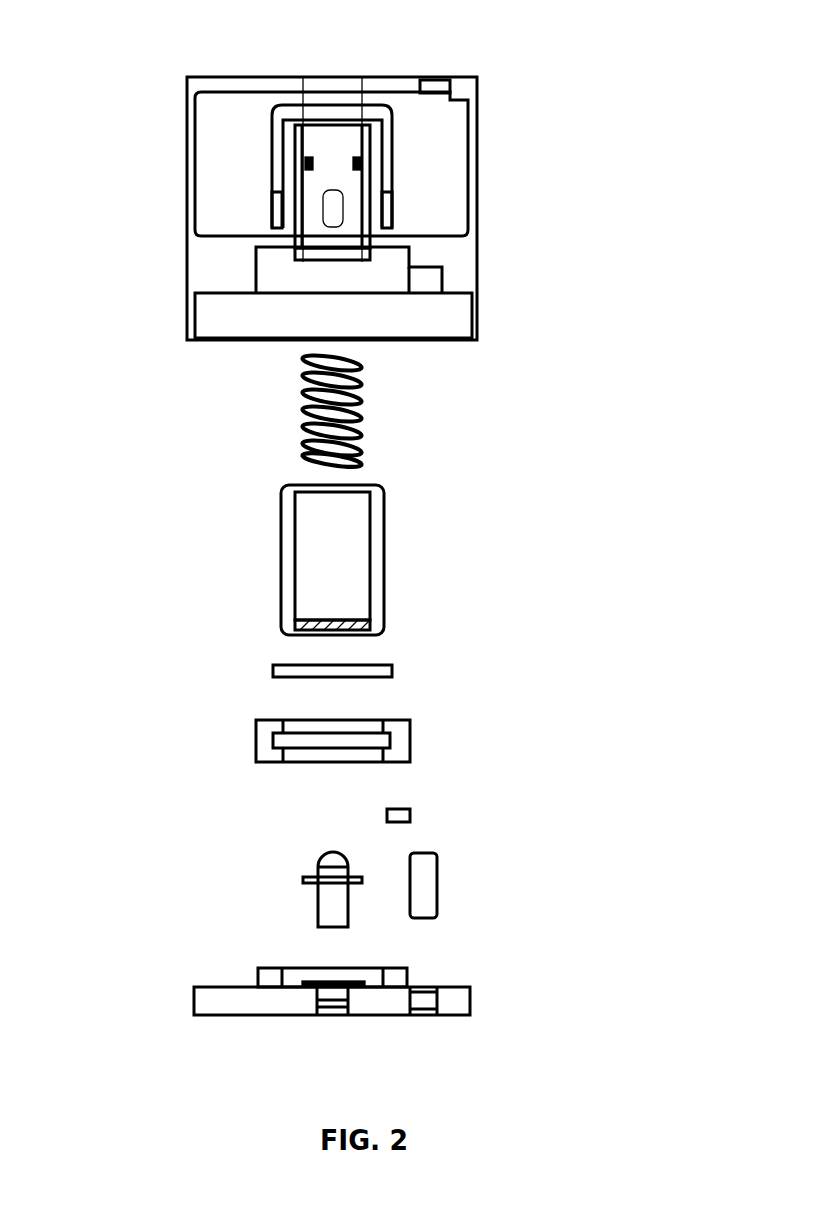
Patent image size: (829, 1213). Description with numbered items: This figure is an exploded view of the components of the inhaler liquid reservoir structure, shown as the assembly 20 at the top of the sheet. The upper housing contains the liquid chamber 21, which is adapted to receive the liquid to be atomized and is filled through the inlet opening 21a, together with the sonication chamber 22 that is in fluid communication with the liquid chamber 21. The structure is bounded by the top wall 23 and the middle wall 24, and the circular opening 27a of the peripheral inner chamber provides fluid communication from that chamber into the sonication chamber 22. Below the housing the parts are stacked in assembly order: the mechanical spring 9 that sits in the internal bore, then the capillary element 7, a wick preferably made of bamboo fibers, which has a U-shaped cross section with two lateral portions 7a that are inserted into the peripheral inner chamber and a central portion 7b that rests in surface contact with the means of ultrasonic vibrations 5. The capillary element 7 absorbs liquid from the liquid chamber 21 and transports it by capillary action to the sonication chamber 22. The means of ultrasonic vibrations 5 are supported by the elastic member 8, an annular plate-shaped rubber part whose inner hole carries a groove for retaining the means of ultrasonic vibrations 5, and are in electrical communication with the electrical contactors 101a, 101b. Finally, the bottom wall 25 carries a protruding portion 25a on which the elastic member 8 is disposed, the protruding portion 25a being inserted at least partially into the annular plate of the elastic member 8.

The switch unit 20 is at (157, 157).
The liquid chamber 21 is at (445, 138).
The inlet opening 21a is at (443, 88).
The sonication chamber 22 is at (462, 270).
The top wall 23 is at (326, 56).
The middle wall 24 is at (461, 359).
The circular opening 27a is at (320, 273).
The mechanical spring 9 is at (287, 392).
The capillary element 7 is at (382, 604).
The lateral portion 7a is at (393, 563).
The central portion 7b is at (383, 632).
The means of ultrasonic vibrations 5 is at (267, 672).
The elastic member 8 is at (412, 730).
The electrical contactor 101a is at (314, 908).
The electrical contactor 101b is at (446, 897).
The bottom wall 25 is at (402, 971).
The protruding portion 25a is at (407, 973).